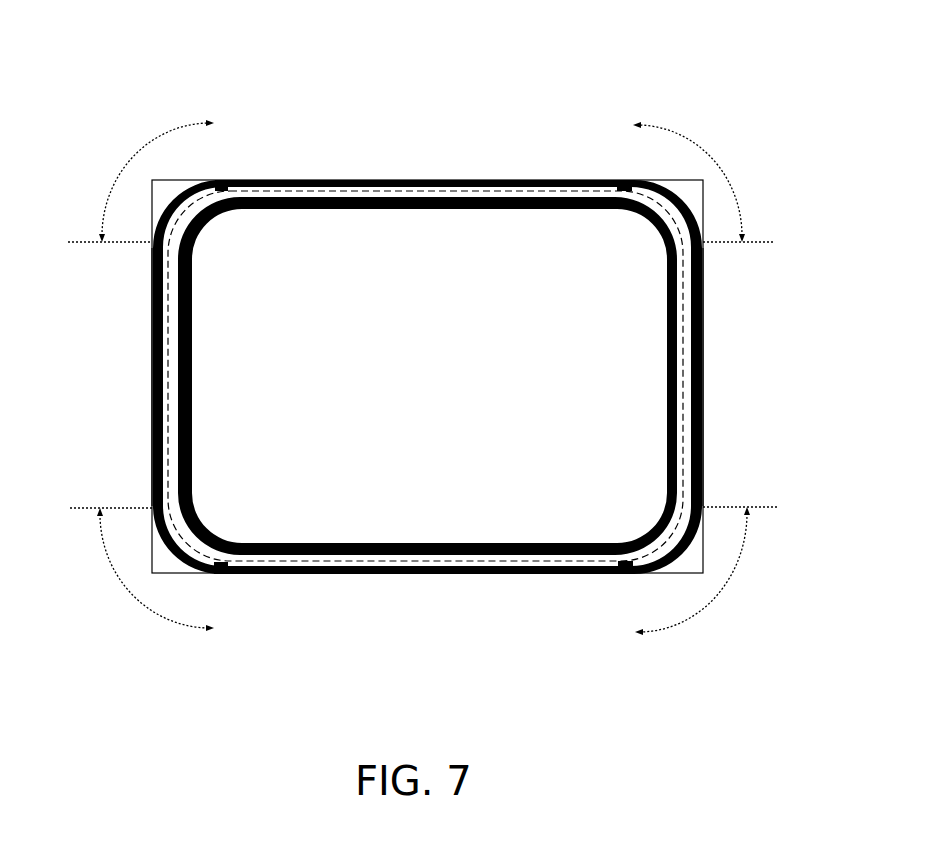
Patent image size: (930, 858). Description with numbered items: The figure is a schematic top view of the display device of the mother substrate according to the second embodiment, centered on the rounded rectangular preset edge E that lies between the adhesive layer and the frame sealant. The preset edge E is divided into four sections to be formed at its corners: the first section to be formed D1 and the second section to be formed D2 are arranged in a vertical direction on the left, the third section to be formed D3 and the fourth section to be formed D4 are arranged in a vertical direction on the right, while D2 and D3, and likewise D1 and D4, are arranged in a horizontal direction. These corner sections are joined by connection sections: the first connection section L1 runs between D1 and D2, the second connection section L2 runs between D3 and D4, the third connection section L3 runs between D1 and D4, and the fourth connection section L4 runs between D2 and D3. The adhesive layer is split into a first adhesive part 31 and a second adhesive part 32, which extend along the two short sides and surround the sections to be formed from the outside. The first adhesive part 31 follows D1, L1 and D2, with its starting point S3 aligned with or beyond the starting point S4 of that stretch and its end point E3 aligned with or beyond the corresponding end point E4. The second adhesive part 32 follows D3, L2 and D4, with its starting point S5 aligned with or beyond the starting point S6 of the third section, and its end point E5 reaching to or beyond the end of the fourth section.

The first adhesive part 31 is at (152, 315).
The second adhesive part 32 is at (704, 298).
The preset edge E is at (152, 440).
The first connection section L1 is at (152, 377).
The second connection section L2 is at (704, 368).
The third connection section L3 is at (367, 192).
The fourth connection section L4 is at (380, 562).
The starting point of the first adhesive part S3 is at (228, 180).
The starting point of the first section to be formed S4 is at (217, 180).
The starting point of the second adhesive part S5 is at (617, 574).
The starting point of the third section to be formed S6 is at (633, 574).
The end point of the first adhesive part E3 is at (228, 574).
The end point of the first section to be formed E4 is at (216, 574).
The end point of the second adhesive part E5 is at (617, 180).
The first section to be formed D1 is at (141, 181).
The second section to be formed D2 is at (142, 569).
The third section to be formed D3 is at (706, 571).
The fourth section to be formed D4 is at (704, 182).